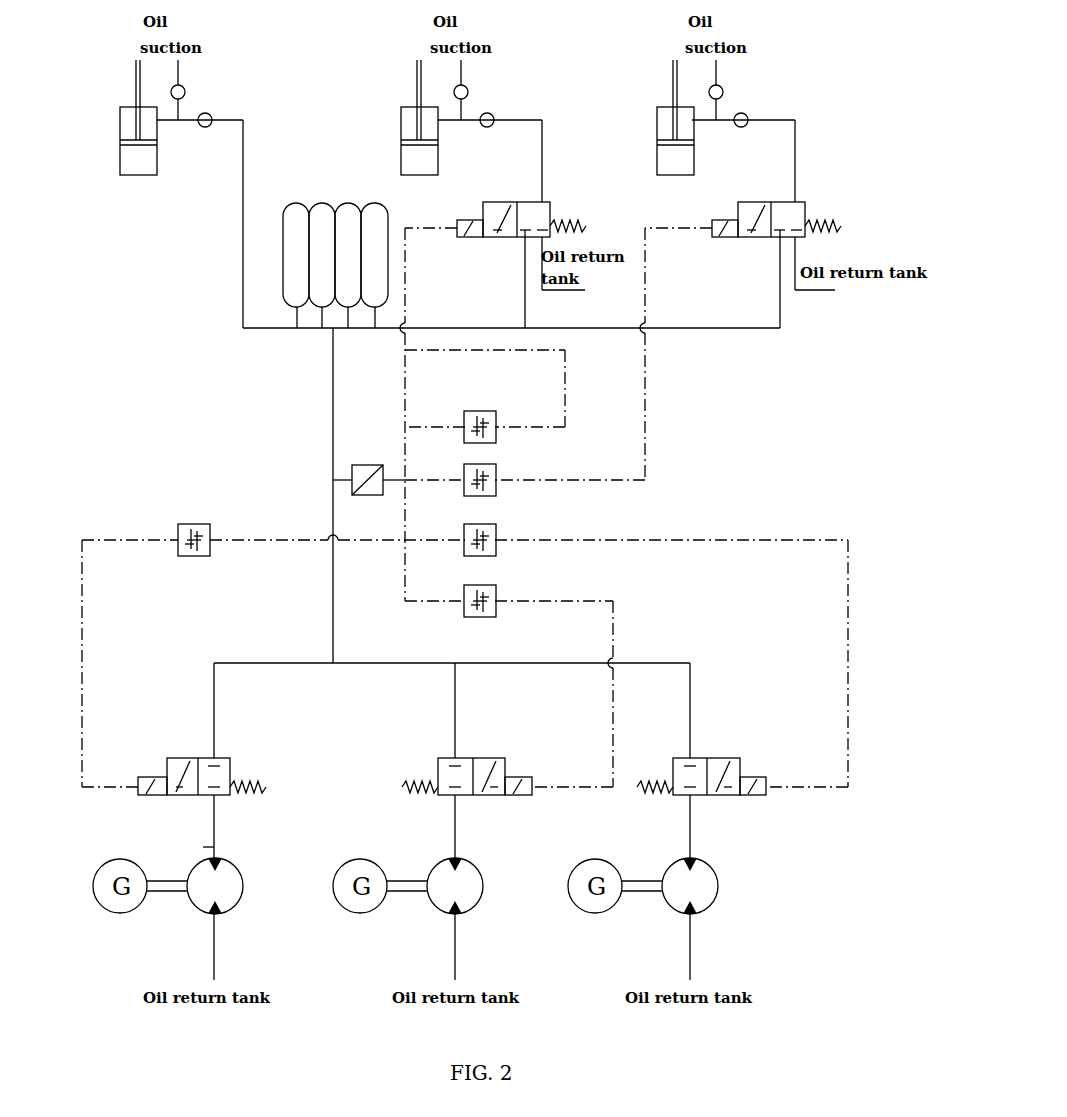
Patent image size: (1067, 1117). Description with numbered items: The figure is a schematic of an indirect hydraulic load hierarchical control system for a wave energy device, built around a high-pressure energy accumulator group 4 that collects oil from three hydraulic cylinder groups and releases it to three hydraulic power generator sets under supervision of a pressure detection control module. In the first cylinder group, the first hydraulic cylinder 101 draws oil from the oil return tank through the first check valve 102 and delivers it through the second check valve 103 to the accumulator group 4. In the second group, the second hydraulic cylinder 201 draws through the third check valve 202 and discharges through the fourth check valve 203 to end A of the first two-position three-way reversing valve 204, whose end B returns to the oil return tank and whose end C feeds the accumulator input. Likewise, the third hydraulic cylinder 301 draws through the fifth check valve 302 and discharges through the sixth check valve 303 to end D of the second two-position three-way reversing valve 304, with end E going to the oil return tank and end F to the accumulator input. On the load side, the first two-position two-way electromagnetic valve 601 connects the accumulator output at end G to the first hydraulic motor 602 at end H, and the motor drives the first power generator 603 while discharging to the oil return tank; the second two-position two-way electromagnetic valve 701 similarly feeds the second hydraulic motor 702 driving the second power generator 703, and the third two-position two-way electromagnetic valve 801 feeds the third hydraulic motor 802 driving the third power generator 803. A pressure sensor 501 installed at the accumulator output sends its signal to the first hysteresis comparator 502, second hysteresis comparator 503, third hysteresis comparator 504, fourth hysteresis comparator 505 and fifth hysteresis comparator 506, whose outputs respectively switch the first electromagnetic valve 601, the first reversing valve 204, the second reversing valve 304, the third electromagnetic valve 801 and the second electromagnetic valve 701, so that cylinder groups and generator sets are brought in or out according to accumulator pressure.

The high-pressure energy accumulator group 4 is at (350, 203).
The first hydraulic cylinder 101 is at (117, 113).
The first check valve 102 is at (182, 82).
The second check valve 103 is at (211, 109).
The second hydraulic cylinder 201 is at (400, 113).
The third check valve 202 is at (465, 82).
The fourth check valve 203 is at (493, 109).
The first two-position three-way reversing valve 204 is at (492, 200).
The third hydraulic cylinder 301 is at (655, 113).
The fifth check valve 302 is at (720, 82).
The sixth check valve 303 is at (747, 109).
The second two-position three-way reversing valve 304 is at (752, 200).
The pressure sensor 501 is at (350, 468).
The first hysteresis comparator 502 is at (186, 523).
The second hysteresis comparator 503 is at (499, 425).
The third hysteresis comparator 504 is at (499, 479).
The fourth hysteresis comparator 505 is at (499, 539).
The fifth hysteresis comparator 506 is at (499, 600).
The first two-position two-way electromagnetic valve 601 is at (195, 757).
The first hydraulic motor 602 is at (212, 915).
The first power generator 603 is at (117, 915).
The second two-position two-way electromagnetic valve 701 is at (470, 757).
The second hydraulic motor 702 is at (452, 915).
The second power generator 703 is at (357, 915).
The third two-position two-way electromagnetic valve 801 is at (722, 757).
The third hydraulic motor 802 is at (687, 915).
The third power generator 803 is at (592, 915).